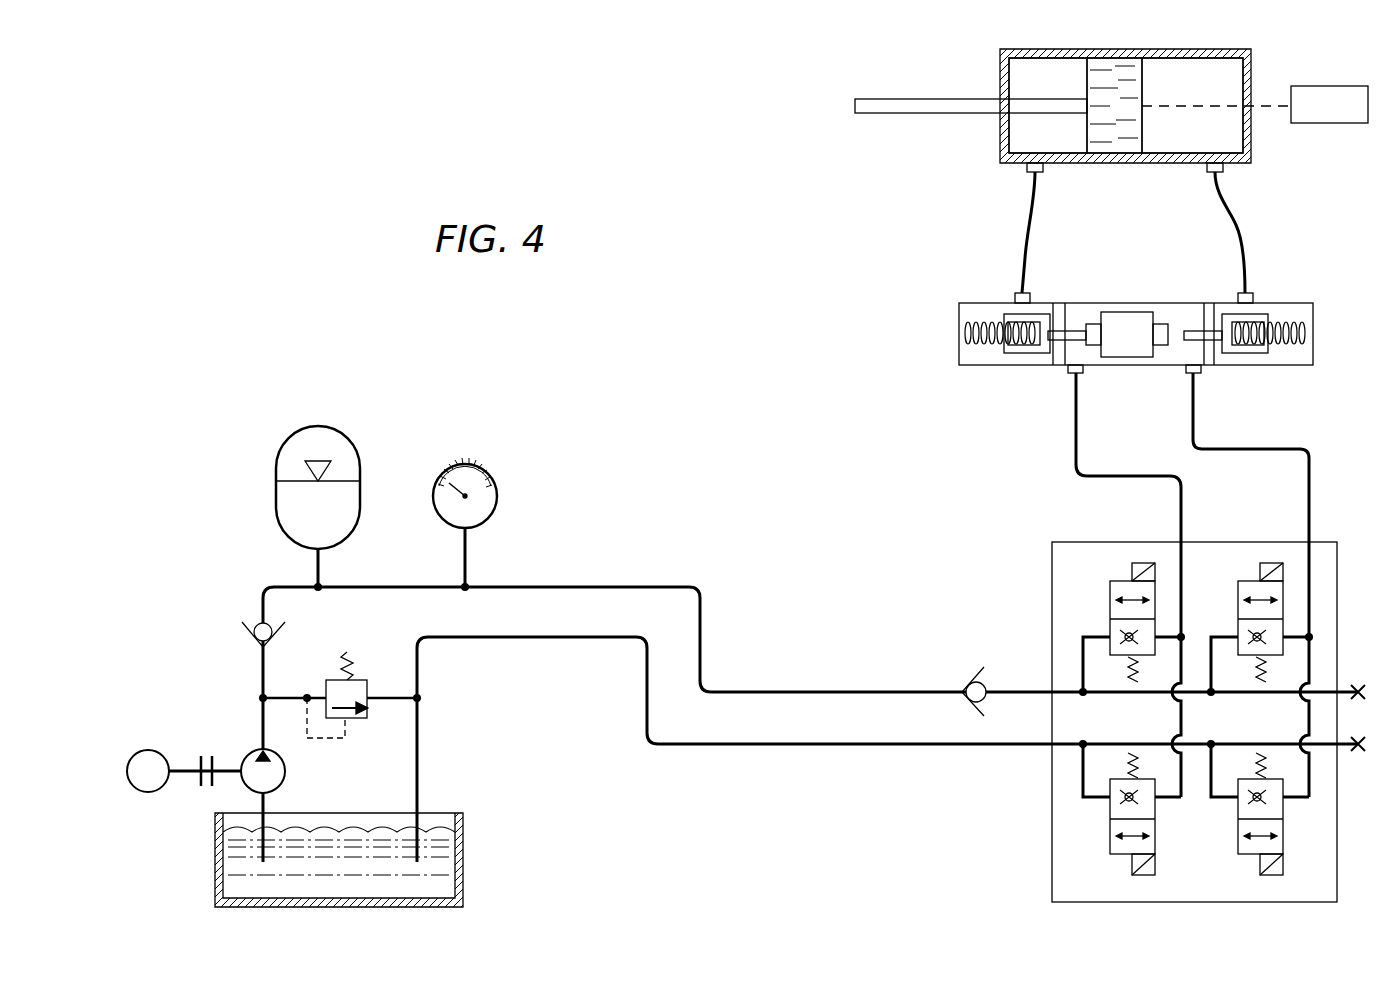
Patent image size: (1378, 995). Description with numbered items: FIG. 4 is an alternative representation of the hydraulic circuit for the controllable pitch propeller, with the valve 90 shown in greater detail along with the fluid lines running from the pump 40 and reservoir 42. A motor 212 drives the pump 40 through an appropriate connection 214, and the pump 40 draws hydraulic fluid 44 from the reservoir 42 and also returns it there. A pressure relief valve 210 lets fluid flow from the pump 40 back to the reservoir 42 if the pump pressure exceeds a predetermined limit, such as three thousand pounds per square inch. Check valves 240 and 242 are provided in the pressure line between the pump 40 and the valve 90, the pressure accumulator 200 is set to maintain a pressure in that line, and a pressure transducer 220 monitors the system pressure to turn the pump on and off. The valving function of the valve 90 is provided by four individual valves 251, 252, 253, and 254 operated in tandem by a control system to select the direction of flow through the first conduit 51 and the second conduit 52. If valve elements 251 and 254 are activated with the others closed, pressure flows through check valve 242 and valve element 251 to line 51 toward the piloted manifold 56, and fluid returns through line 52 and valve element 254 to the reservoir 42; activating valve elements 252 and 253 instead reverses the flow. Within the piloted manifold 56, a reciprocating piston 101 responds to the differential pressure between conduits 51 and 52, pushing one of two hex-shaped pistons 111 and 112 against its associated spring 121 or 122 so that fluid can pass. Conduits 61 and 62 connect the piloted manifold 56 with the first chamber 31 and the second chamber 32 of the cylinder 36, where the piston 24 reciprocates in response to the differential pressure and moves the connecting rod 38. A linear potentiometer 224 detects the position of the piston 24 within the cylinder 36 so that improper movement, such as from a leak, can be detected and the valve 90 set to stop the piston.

The piston 24 is at (1125, 137).
The first chamber 31 is at (1018, 77).
The second chamber 32 is at (1220, 76).
The cylinder 36 is at (1148, 172).
The connecting rod 38 is at (935, 113).
The pump 40 is at (292, 788).
The reservoir 42 is at (463, 848).
The hydraulic fluid 44 is at (233, 886).
The first conduit 51 is at (1103, 478).
The second conduit 52 is at (1257, 452).
The piloted manifold 56 is at (1144, 339).
The conduit 61 is at (1028, 235).
The conduit 62 is at (1240, 228).
The valve 90 is at (1134, 722).
The reciprocating piston 101 is at (1125, 348).
The hex-shaped piston 111 is at (1043, 355).
The hex-shaped piston 112 is at (1224, 360).
The spring 121 is at (983, 352).
The spring 122 is at (1275, 322).
The pressure accumulator 200 is at (358, 450).
The pressure relief valve 210 is at (367, 686).
The motor 212 is at (143, 792).
The connection 214 is at (205, 752).
The pressure transducer 220 is at (497, 489).
The linear potentiometer 224 is at (1308, 117).
The check valve 240 is at (248, 632).
The check valve 242 is at (968, 683).
The valve element 251 is at (1110, 610).
The valve element 252 is at (1238, 610).
The valve element 253 is at (1110, 830).
The valve element 254 is at (1238, 830).